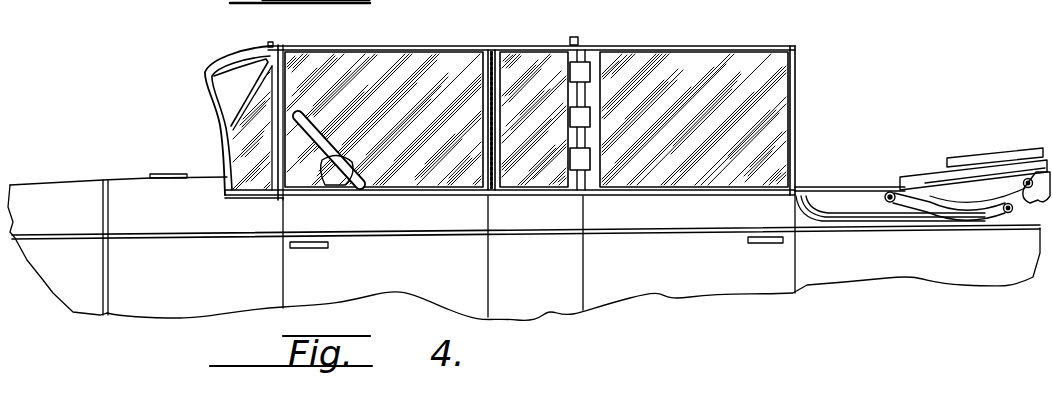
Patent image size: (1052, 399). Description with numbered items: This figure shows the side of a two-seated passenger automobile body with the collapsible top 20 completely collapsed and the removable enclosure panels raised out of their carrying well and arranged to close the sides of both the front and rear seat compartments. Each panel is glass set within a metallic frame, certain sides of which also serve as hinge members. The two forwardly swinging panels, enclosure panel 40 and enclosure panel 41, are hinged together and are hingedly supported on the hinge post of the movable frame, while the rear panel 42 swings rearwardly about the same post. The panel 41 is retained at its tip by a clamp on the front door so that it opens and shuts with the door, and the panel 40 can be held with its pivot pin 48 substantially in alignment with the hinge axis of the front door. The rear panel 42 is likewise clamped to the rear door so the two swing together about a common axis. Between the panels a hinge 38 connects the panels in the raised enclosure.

The collapsible top 20 is at (993, 165).
The hinge 38 is at (575, 42).
The enclosure panel 40 is at (522, 62).
The enclosure panel 41 is at (410, 63).
The rear panel 42 is at (670, 58).
The pivot pin 48 is at (490, 47).